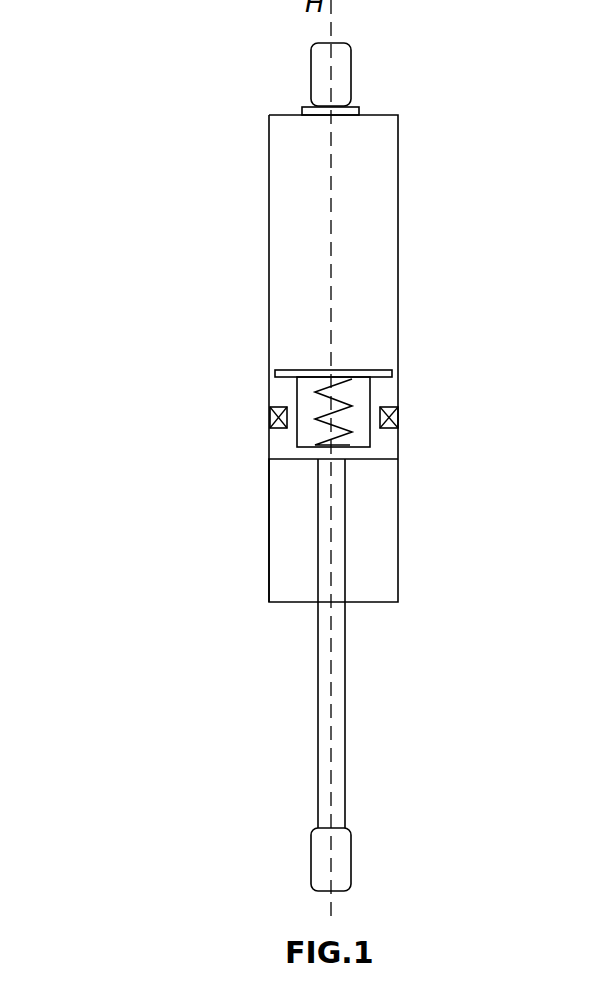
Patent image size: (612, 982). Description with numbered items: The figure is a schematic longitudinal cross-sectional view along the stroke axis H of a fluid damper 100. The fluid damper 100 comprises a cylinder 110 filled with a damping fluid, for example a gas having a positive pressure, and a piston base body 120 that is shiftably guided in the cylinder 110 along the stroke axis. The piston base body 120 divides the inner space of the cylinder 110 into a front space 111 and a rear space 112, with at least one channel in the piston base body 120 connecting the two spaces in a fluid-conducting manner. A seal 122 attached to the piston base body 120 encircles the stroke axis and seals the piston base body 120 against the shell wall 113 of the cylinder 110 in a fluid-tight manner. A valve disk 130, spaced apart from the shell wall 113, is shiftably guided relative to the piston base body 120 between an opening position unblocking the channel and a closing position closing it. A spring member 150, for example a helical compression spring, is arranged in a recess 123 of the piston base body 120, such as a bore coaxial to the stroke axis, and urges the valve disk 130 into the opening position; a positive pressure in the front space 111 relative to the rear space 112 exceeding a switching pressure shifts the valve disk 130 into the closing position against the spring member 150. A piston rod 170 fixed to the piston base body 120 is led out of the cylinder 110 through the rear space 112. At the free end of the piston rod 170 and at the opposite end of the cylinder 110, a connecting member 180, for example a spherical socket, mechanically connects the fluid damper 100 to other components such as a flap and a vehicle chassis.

The fluid damper 100 is at (282, 446).
The cylinder 110 is at (390, 331).
The front space 111 is at (326, 232).
The rear space 112 is at (447, 488).
The shell wall 113 is at (219, 358).
The piston base body 120 is at (402, 382).
The seal 122 is at (281, 405).
The recess 123 is at (416, 407).
The valve disk 130 is at (290, 350).
The spring member 150 is at (441, 419).
The piston rod 170 is at (399, 643).
The connecting member 180 is at (395, 446).